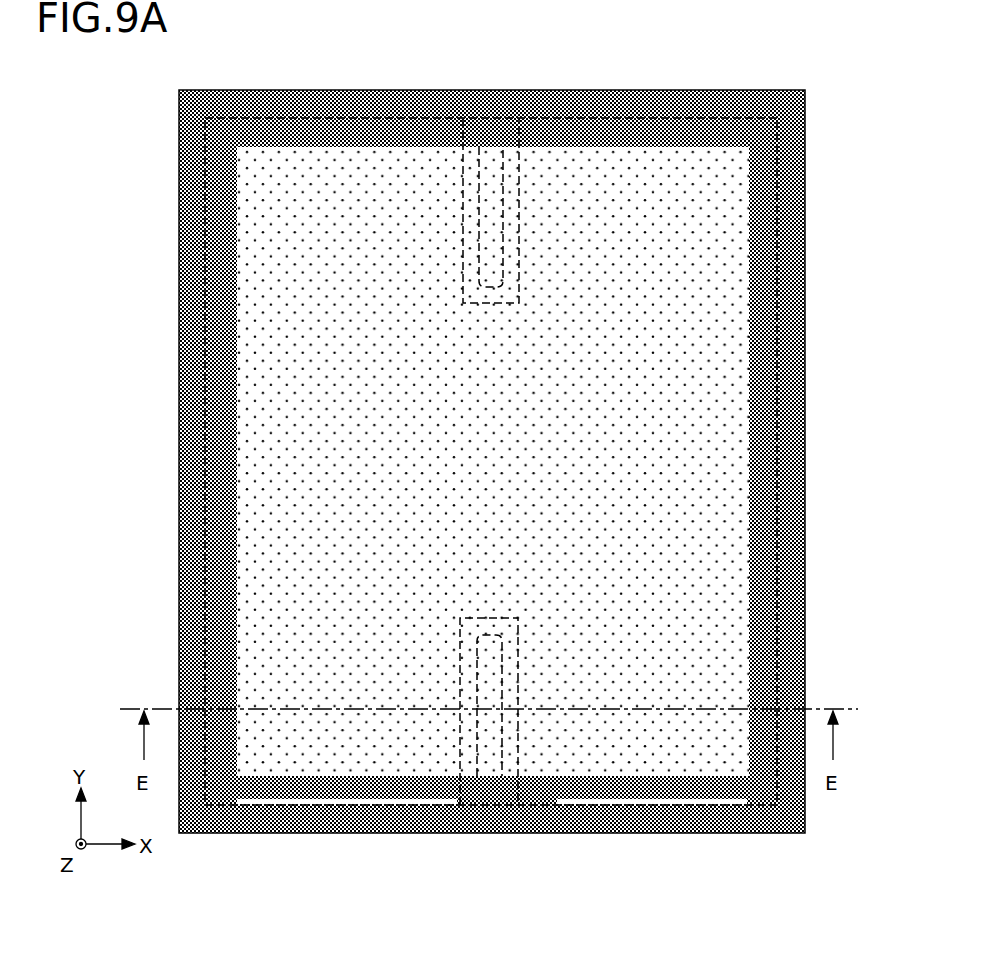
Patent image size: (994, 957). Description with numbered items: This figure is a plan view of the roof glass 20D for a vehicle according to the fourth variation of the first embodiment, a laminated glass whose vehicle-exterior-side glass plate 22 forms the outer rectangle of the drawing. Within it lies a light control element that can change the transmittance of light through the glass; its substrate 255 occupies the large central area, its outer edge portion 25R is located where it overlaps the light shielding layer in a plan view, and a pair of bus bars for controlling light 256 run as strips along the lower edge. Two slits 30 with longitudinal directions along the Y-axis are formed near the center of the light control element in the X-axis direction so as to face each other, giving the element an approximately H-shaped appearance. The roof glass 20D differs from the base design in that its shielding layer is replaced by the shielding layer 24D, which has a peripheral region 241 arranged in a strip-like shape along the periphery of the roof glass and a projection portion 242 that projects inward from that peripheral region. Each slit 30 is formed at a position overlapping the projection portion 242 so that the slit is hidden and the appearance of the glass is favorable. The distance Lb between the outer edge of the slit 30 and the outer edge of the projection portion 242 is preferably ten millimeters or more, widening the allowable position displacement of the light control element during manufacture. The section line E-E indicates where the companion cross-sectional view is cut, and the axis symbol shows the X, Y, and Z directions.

The roof glass 20D is at (138, 86).
The glass plate 22 is at (782, 90).
The shielding layer 24D is at (663, 45).
The peripheral region 241 is at (579, 110).
The projection portion 242 is at (513, 217).
The outer edge portion 25R is at (780, 470).
The substrate 255 is at (703, 369).
The bus bars for controlling light 256 is at (330, 805).
The slit 30 is at (497, 200).
The distance Lb is at (463, 287).